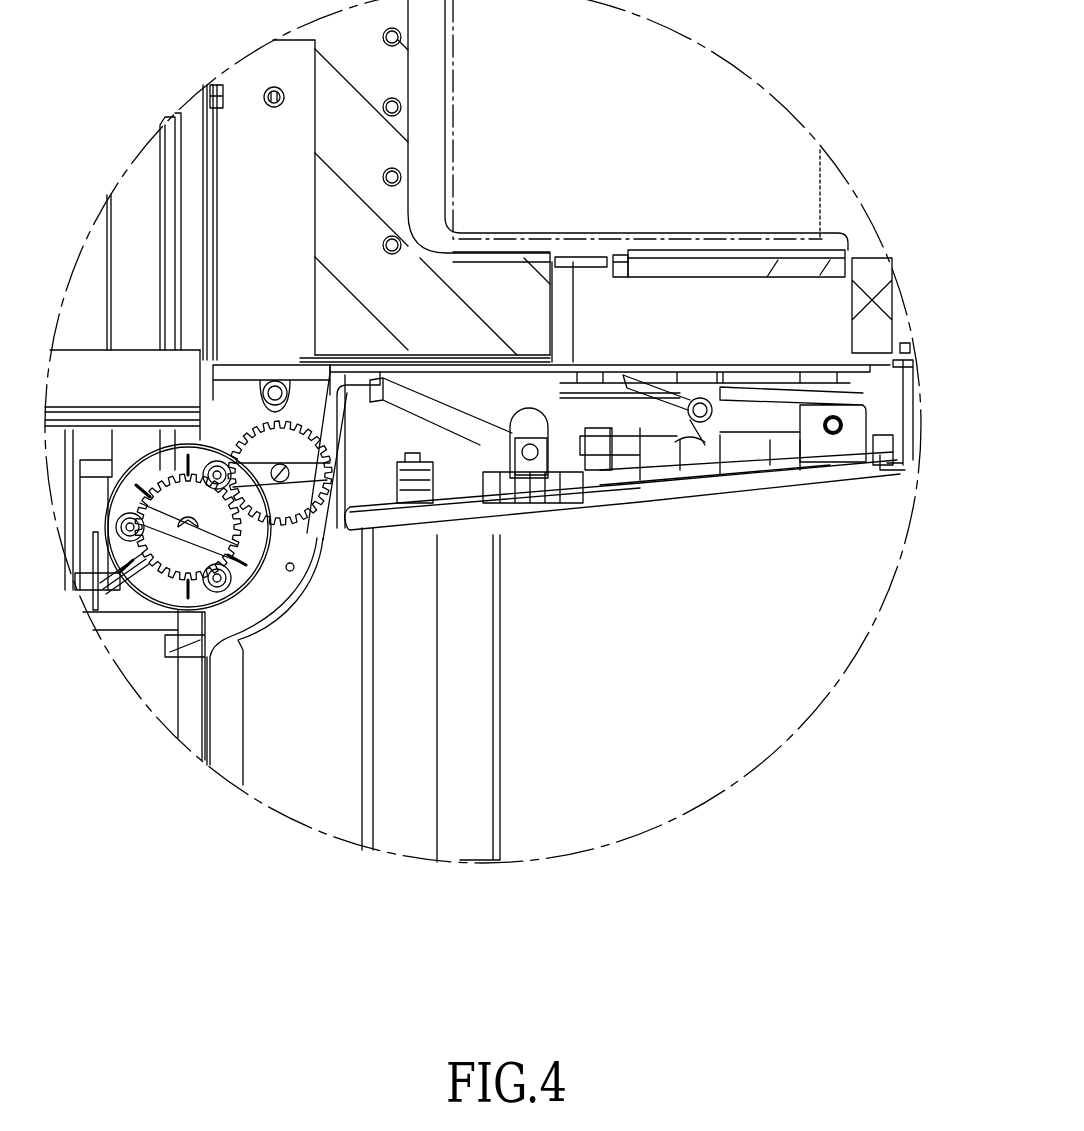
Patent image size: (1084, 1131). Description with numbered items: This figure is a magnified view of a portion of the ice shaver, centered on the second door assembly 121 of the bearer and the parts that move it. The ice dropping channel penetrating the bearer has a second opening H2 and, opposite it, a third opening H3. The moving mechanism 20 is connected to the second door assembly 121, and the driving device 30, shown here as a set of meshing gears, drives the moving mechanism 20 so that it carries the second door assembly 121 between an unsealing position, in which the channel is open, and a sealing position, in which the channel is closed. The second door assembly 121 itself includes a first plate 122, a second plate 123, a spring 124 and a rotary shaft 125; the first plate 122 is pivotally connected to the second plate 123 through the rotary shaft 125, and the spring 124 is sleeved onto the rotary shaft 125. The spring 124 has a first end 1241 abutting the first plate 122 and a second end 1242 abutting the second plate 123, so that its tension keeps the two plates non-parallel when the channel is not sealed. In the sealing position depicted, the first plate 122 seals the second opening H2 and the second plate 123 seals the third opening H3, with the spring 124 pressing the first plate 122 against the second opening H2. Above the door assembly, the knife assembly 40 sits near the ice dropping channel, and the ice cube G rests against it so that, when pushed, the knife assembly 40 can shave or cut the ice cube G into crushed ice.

The ice cube G is at (753, 103).
The knife assembly 40 is at (732, 268).
The second opening H2 is at (797, 375).
The third opening H3 is at (893, 465).
The driving device 30 is at (150, 462).
The moving mechanism 20 is at (470, 437).
The second door assembly 121 is at (622, 505).
The first plate 122 is at (758, 372).
The second plate 123 is at (757, 483).
The spring 124 is at (695, 497).
The rotary shaft 125 is at (702, 396).
The first end 1241 is at (645, 372).
The second end 1242 is at (612, 433).